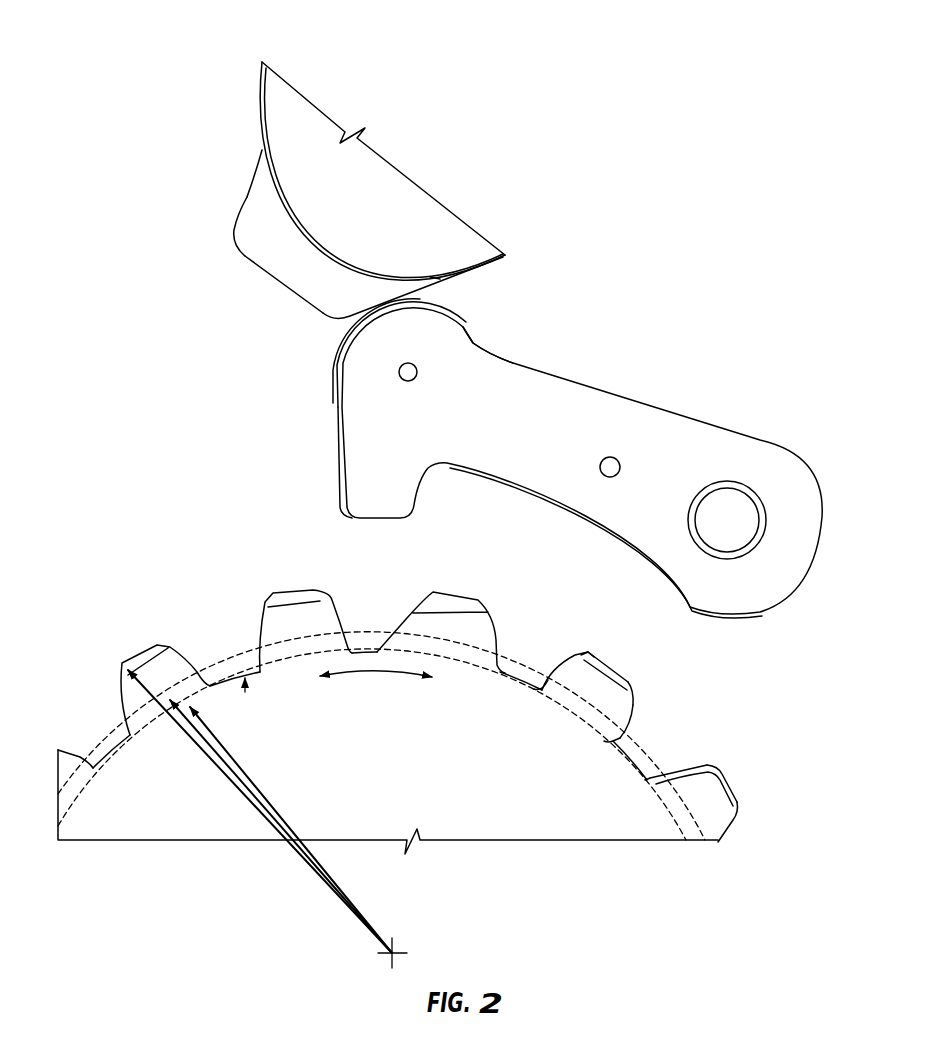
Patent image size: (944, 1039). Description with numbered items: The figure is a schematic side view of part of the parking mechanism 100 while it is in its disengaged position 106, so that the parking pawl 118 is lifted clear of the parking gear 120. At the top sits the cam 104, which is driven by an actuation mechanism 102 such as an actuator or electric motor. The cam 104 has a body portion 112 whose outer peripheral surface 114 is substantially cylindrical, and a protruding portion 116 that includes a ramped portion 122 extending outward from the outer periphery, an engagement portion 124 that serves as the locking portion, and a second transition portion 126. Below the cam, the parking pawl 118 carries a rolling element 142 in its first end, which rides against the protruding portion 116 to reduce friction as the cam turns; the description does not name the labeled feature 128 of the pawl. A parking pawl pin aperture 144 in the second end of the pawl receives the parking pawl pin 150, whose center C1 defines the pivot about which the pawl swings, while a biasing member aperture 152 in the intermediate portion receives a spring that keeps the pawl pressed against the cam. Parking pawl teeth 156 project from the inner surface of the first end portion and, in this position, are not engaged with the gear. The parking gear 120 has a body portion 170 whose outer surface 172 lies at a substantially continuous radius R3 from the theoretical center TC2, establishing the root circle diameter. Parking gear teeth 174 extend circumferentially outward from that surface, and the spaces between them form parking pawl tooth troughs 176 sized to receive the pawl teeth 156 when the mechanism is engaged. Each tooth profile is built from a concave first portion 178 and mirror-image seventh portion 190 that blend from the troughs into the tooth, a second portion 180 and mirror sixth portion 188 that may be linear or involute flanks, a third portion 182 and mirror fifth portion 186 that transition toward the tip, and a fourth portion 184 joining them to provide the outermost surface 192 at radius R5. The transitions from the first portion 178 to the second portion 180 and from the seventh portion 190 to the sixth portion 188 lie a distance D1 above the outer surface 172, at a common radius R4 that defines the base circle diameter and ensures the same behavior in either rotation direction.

The parking mechanism 100 is at (703, 323).
The actuation mechanism 102 is at (340, 171).
The cam 104 is at (336, 236).
The disengaged position 106 is at (166, 440).
The body portion 112 is at (262, 140).
The outer peripheral surface 114 is at (258, 108).
The protruding portion 116 is at (247, 249).
The parking pawl 118 is at (538, 458).
The parking gear 120 is at (425, 766).
The ramped portion 122 is at (436, 280).
The engagement portion 124 is at (265, 273).
The second transition portion 126 is at (253, 183).
The arm shoulder 128 is at (457, 333).
The rolling element 142 is at (333, 358).
The parking pawl pin aperture 144 is at (740, 504).
The parking pawl pin 150 is at (740, 495).
The biasing member aperture 152 is at (613, 457).
The parking pawl teeth 156 is at (350, 467).
The body portion 170 is at (655, 775).
The outer surface 172 is at (632, 775).
The parking gear teeth 174 is at (120, 662).
The parking pawl tooth trough 176 is at (110, 752).
The first portion 178 is at (539, 679).
The second portion 180 is at (561, 661).
The third portion 182 is at (588, 650).
The fourth portion 184 is at (621, 670).
The fifth portion 186 is at (637, 687).
The sixth portion 188 is at (637, 707).
The seventh portion 190 is at (620, 737).
The outermost surface 192 is at (723, 770).
The center of the parking pawl pin C1 is at (728, 524).
The distance D1 is at (240, 657).
The radius R3 is at (292, 843).
The radius R4 is at (297, 852).
The radius R5 is at (303, 860).
The theoretical center TC2 is at (393, 955).